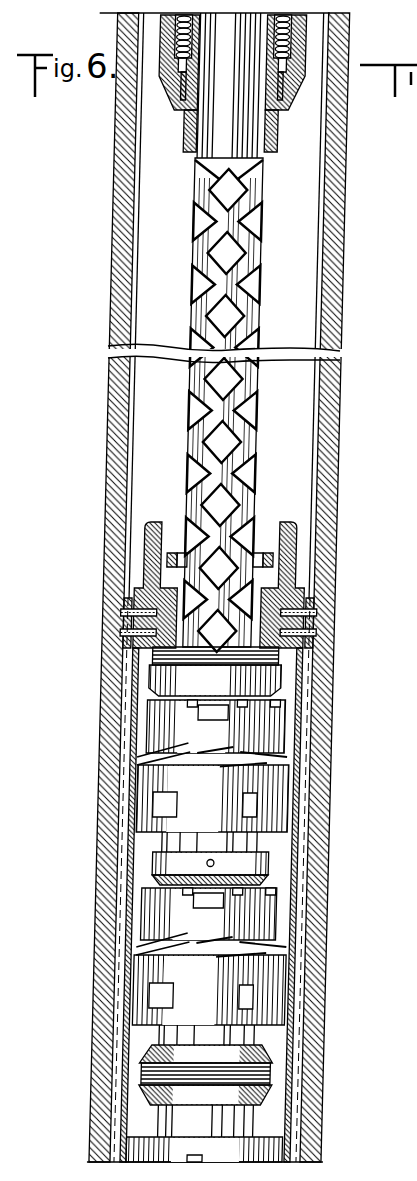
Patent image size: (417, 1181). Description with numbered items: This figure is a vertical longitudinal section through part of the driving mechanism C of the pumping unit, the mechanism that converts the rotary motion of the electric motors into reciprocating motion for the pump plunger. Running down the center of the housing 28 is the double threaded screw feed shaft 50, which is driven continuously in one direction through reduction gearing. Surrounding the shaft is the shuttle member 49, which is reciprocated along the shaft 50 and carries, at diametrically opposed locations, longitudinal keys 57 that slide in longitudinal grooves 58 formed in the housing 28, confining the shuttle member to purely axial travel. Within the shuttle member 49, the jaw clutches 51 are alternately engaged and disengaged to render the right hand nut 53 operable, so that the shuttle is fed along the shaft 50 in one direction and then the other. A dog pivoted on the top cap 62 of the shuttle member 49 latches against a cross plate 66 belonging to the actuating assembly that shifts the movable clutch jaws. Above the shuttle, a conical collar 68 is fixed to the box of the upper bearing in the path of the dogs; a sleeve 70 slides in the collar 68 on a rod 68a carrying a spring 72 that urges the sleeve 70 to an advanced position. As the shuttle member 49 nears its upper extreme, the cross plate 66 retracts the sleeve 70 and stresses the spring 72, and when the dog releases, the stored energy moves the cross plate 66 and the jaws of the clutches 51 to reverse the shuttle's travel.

The housing 28 is at (117, 253).
The spring 72 is at (158, 30).
The conical collar 68 is at (301, 41).
The rod 68a is at (304, 60).
The sleeve 70 is at (278, 135).
The double threaded screw feed shaft 50 is at (215, 443).
The longitudinal groove 58 is at (125, 512).
The cross plate 66 is at (268, 560).
The top cap 62 is at (300, 600).
The shuttle member 49 is at (147, 750).
The jaw clutch 51 is at (165, 762).
The right hand nut 53 is at (178, 836).
The longitudinal key 57 is at (115, 1015).
The driving mechanism C is at (300, 748).